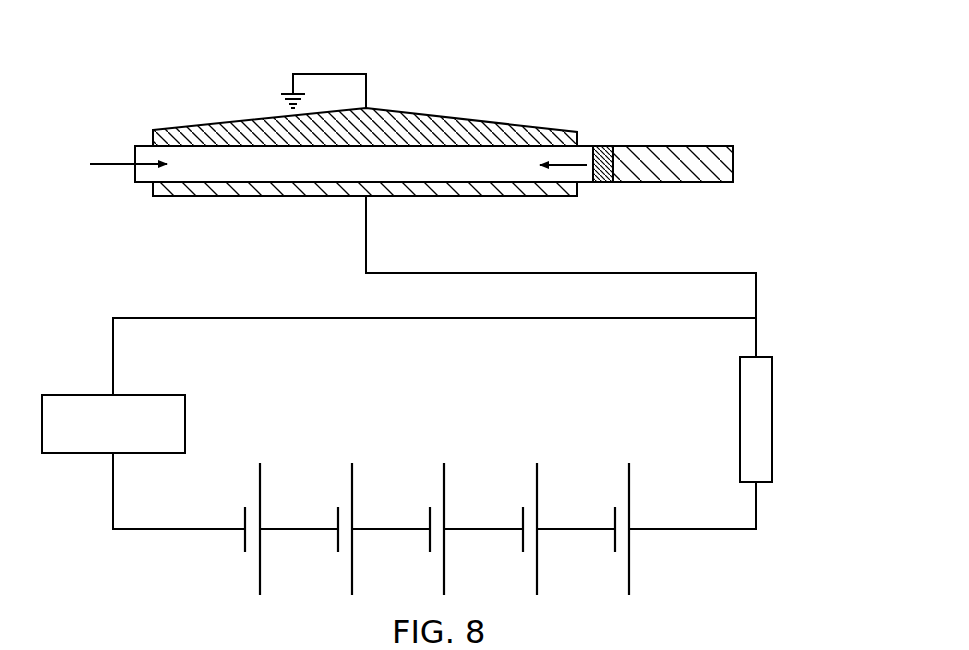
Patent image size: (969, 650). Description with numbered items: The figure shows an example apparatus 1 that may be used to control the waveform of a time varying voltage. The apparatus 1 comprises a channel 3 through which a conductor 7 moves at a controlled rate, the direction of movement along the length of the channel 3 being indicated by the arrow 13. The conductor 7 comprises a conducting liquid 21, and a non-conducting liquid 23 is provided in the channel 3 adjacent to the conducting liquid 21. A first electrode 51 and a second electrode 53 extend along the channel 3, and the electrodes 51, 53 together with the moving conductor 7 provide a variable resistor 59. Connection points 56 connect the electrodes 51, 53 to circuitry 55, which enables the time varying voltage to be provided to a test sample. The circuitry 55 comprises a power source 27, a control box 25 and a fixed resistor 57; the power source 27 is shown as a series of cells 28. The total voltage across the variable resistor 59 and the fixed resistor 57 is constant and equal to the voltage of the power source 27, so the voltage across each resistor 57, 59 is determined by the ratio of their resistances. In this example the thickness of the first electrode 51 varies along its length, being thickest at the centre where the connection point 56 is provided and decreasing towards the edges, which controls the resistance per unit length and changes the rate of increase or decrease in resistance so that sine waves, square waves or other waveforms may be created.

The apparatus 1 is at (592, 65).
The channel 3 is at (116, 165).
The conductor 7 is at (603, 183).
The arrow 13 is at (567, 163).
The conducting liquid 21 is at (605, 135).
The non-conducting liquid 23 is at (702, 135).
The control box 25 is at (177, 425).
The power source 27 is at (640, 541).
The battery cell 28 is at (262, 548).
The first electrode 51 is at (460, 100).
The second electrode 53 is at (458, 200).
The circuitry 55 is at (785, 338).
The connection point 56 is at (368, 106).
The fixed resistor 57 is at (772, 418).
The variable resistor 59 is at (782, 163).